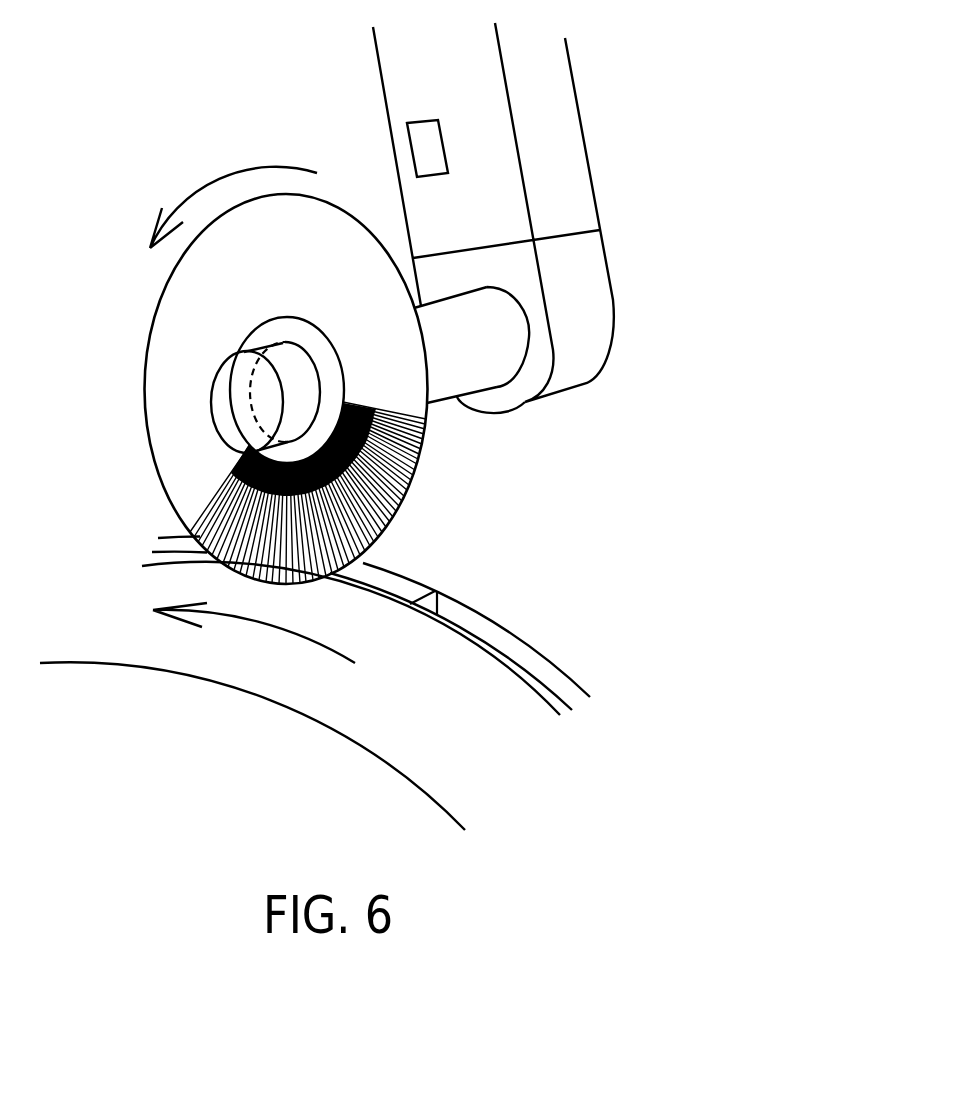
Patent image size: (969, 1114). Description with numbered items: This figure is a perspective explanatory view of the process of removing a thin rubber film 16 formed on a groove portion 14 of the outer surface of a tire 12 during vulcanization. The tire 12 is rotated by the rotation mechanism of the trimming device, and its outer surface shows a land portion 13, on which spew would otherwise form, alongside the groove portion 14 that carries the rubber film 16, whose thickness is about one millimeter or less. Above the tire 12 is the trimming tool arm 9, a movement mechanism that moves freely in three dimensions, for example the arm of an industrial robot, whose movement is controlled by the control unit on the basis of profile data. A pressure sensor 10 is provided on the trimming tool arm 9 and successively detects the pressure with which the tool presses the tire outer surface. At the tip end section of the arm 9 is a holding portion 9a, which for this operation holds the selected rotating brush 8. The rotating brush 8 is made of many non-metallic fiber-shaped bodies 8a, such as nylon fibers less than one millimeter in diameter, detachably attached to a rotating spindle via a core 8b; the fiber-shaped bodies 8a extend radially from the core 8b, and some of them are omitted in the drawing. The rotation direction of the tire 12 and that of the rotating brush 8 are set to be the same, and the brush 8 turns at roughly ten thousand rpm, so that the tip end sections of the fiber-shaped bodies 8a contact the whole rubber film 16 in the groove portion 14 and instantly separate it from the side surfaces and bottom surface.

The rotating brush 8 is at (397, 252).
The fiber-shaped bodies 8a is at (413, 480).
The core 8b is at (258, 338).
The trimming tool arm 9 is at (397, 82).
The holding portion 9a is at (565, 372).
The pressure sensor 10 is at (418, 145).
The tire 12 is at (331, 747).
The land portion 13 is at (522, 702).
The groove portion 14 is at (513, 612).
The thin rubber film 16 is at (437, 588).